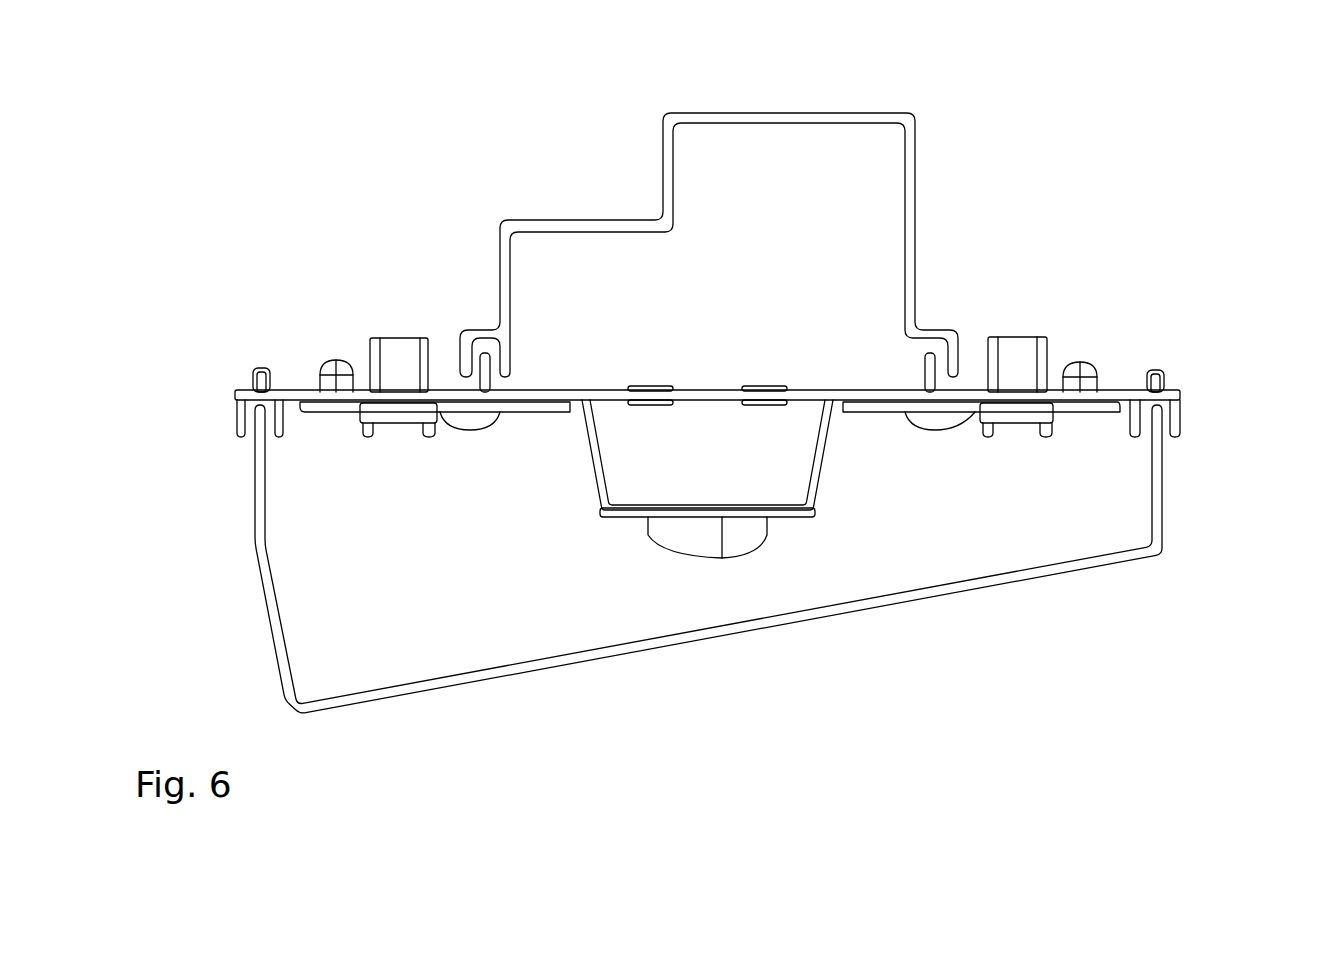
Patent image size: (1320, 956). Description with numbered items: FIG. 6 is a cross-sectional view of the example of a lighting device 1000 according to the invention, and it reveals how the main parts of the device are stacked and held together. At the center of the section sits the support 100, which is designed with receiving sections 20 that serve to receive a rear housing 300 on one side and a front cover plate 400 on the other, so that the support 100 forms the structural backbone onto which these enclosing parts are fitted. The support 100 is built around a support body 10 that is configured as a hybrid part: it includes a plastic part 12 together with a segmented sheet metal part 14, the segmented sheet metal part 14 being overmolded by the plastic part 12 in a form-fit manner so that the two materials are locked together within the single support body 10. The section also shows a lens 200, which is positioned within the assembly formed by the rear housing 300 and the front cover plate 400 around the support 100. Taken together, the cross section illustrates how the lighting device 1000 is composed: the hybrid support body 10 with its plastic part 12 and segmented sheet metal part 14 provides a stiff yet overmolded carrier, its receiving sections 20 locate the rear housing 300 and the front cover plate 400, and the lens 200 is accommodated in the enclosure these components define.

The lighting device 1000 is at (407, 207).
The rear housing 300 is at (640, 222).
The receiving sections 20 is at (932, 345).
The support 100 is at (1113, 333).
The support body 10 is at (365, 332).
The plastic part 12 is at (363, 347).
The segmented sheet metal part 14 is at (383, 432).
The lens 200 is at (738, 562).
The front cover plate 400 is at (603, 655).